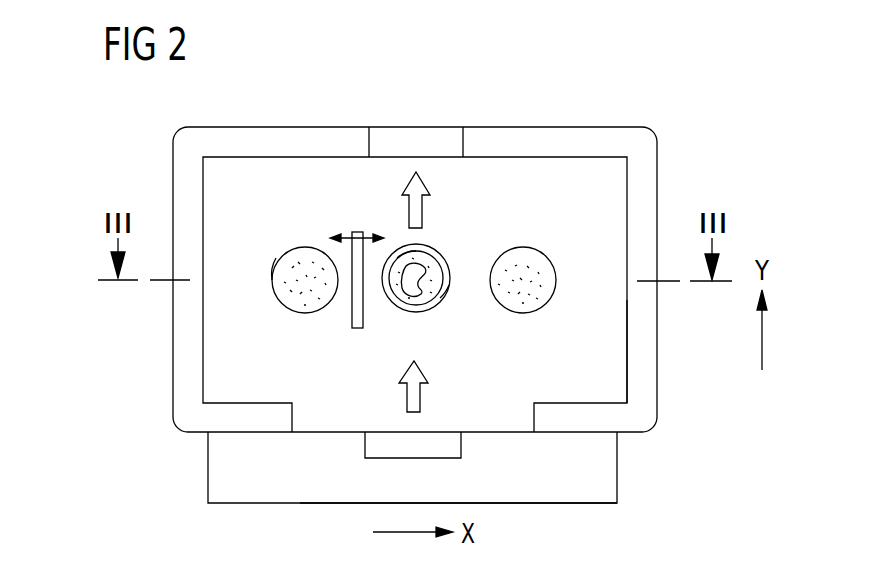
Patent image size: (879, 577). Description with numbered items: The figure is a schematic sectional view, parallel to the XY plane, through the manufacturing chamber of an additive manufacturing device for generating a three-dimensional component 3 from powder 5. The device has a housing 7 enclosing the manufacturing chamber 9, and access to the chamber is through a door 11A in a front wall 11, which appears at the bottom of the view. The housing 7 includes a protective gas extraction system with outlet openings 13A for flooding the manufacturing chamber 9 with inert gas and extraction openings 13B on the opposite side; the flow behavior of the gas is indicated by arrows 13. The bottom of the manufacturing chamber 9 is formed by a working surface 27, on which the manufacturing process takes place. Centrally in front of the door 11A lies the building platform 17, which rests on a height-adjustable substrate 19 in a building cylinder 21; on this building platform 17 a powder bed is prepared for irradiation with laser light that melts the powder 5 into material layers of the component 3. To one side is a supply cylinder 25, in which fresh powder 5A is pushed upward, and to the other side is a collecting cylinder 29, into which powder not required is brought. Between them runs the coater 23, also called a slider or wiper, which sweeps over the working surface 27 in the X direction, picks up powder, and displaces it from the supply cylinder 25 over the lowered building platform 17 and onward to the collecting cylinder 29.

The three-dimensional component 3 is at (428, 303).
The powder 5 is at (403, 300).
The fresh powder 5A is at (289, 267).
The housing 7 is at (570, 127).
The manufacturing chamber 9 is at (603, 197).
The front wall 11 is at (633, 437).
The door 11A is at (619, 498).
The arrows 13 is at (408, 218).
The outlet openings 13A is at (433, 444).
The extraction openings 13B is at (420, 138).
The building platform 17 is at (440, 270).
The substrate 19 is at (423, 262).
The building cylinder 21 is at (447, 292).
The coater 23 is at (350, 325).
The supply cylinder 25 is at (302, 248).
The working surface 27 is at (620, 362).
The collecting cylinder 29 is at (556, 268).